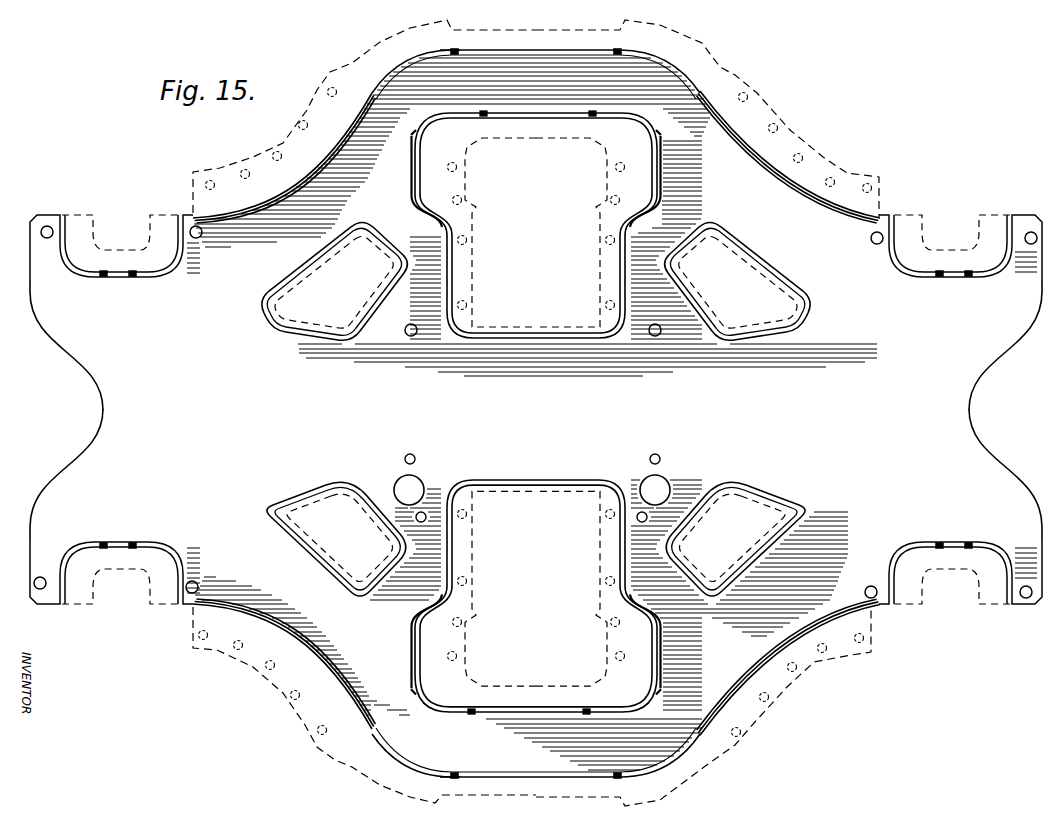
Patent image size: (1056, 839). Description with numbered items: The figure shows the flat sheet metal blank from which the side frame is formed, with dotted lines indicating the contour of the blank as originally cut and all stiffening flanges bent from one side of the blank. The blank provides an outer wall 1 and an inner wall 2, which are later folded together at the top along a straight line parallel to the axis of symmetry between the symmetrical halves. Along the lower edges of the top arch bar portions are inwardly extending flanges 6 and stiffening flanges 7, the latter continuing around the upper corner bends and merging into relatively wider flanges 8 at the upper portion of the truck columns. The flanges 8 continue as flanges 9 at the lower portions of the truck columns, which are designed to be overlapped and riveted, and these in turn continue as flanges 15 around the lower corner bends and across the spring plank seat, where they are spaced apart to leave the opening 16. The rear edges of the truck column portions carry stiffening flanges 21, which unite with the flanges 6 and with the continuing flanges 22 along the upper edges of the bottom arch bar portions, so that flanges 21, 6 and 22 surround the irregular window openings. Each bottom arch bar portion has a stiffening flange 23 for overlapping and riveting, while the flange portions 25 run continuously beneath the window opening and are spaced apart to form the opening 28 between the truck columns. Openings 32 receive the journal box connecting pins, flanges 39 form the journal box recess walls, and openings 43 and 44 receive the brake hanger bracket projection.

The outer wall 1 is at (536, 345).
The inner wall 2 is at (536, 474).
The inwardly extending flanges 6 is at (317, 338).
The stiffening flanges 7 is at (527, 335).
The wider flanges 8 is at (453, 290).
The inwardly extending flanges 9 is at (417, 182).
The inwardly extending flanges 15 is at (485, 115).
The opening 16 is at (487, 115).
The stiffening flanges 21 is at (410, 272).
The continuing flanges 22 is at (306, 262).
The stiffening flange 23 is at (312, 174).
The flanges 25 is at (453, 49).
The opening 28 is at (470, 52).
The openings 32 is at (40, 233).
The inwardly projecting flanges 39 is at (78, 262).
The opening 43 is at (416, 484).
The opening 44 is at (410, 340).